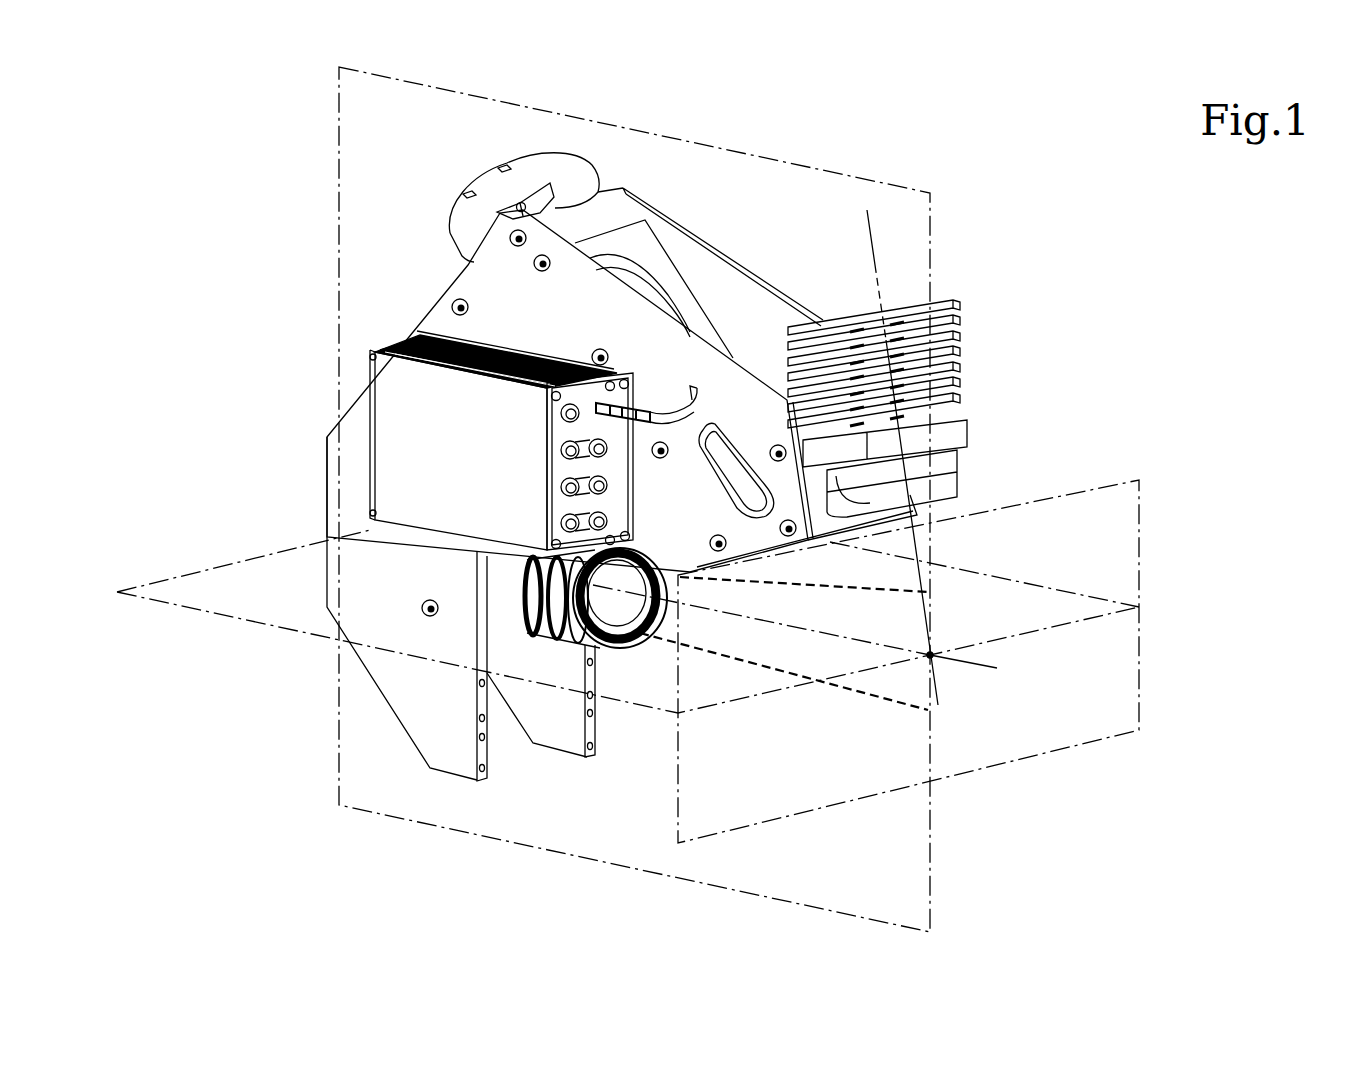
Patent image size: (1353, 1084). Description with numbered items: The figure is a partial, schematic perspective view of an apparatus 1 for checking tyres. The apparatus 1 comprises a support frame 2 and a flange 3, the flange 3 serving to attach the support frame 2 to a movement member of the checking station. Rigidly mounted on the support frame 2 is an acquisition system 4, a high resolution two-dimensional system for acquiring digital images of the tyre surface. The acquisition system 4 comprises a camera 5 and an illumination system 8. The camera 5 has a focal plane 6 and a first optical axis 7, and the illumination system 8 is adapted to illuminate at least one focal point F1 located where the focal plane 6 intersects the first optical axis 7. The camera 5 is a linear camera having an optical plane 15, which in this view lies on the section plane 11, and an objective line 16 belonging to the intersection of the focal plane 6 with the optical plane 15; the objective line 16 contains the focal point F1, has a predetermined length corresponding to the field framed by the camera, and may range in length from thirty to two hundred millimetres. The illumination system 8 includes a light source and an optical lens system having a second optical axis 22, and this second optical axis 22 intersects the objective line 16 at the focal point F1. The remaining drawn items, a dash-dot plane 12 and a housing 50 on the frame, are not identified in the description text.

The apparatus 1 is at (250, 226).
The support frame 2 is at (283, 480).
The flange 3 is at (565, 160).
The acquisition system 4 is at (940, 262).
The camera 5 is at (507, 588).
The focal plane 6 is at (1072, 493).
The first optical axis 7 is at (855, 637).
The illumination system 8 is at (953, 330).
The section plane 11 is at (742, 152).
The horizontal plane 12 is at (193, 572).
The optical plane 15 is at (900, 703).
The objective line 16 is at (933, 608).
The second optical axis 22 is at (933, 494).
The electronics housing 50 is at (437, 412).
The focal point F1 is at (953, 670).